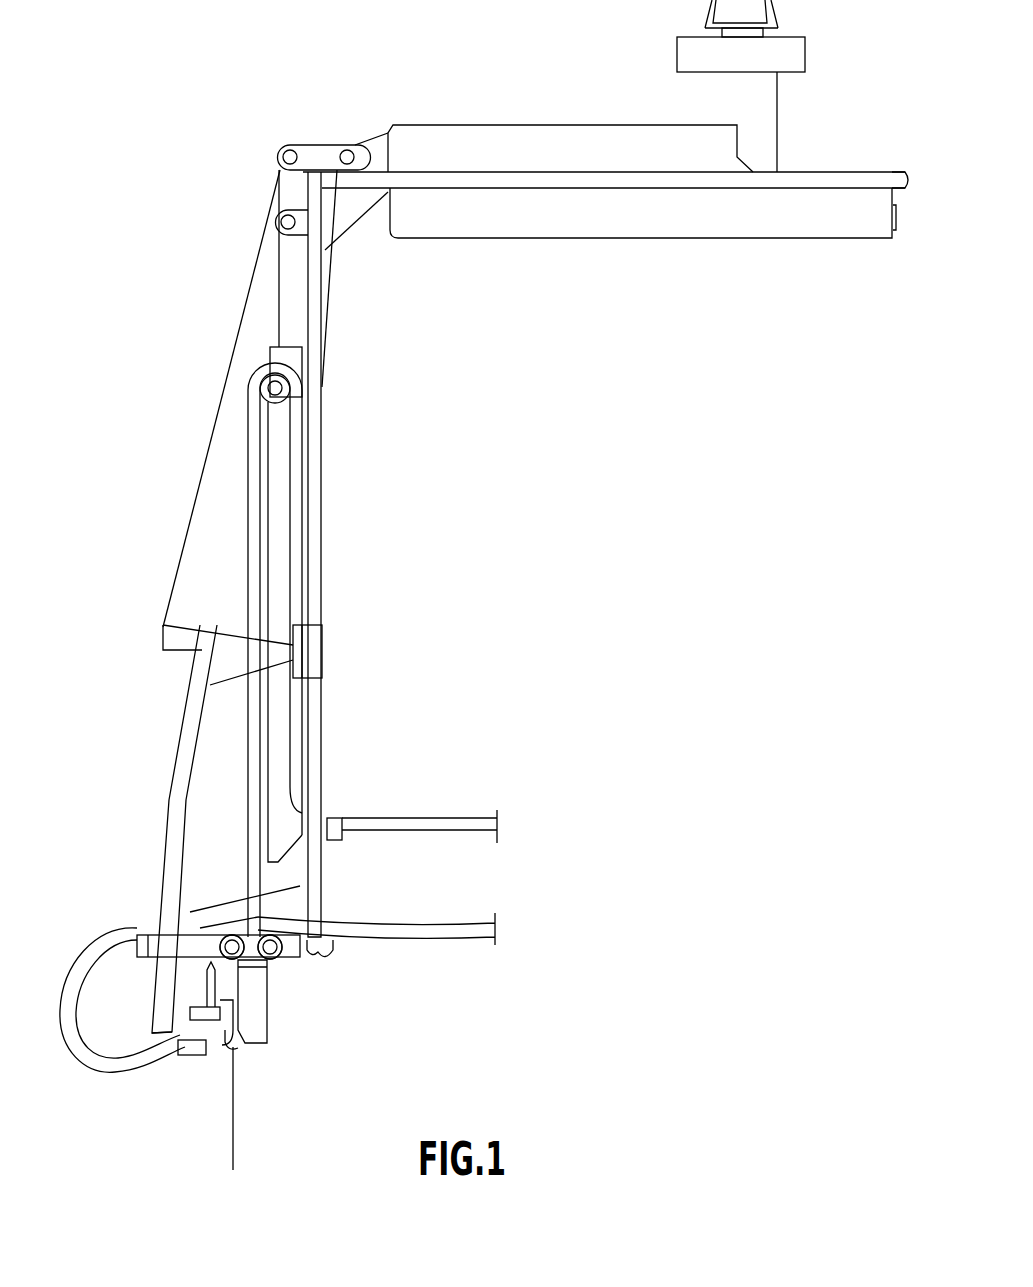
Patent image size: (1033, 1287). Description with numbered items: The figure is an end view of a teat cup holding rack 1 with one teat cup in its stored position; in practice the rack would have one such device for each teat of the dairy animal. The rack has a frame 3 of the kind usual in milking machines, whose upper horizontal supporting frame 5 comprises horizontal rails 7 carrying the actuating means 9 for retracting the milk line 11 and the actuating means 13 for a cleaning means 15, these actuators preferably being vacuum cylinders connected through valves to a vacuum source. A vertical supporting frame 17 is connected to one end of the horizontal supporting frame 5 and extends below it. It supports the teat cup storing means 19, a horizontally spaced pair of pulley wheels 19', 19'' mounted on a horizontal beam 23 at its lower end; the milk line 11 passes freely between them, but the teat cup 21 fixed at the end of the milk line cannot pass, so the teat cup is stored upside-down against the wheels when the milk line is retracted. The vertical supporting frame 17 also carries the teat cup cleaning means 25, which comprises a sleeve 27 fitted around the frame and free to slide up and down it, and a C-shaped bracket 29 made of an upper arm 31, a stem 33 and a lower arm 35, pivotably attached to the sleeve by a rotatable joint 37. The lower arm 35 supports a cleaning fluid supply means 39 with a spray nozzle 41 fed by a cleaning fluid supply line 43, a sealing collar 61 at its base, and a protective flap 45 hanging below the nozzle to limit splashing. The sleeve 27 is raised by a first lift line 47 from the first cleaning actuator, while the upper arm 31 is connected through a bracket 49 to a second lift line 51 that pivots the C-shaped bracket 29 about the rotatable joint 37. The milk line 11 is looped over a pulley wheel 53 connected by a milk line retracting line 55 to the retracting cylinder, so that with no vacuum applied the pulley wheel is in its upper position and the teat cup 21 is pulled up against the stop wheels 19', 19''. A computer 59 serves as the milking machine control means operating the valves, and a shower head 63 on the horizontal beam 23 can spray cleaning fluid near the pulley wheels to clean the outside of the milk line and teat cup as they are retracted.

The teat cup holding rack 1 is at (456, 403).
The frame 3 is at (345, 321).
The horizontal supporting frame 5 is at (792, 185).
The horizontal rails 7 is at (865, 185).
The actuating means for retracting a milk line 9 is at (800, 227).
The milk line 11 is at (417, 817).
The actuating means for a cleaning means 13 is at (507, 133).
The cleaning means 15 is at (158, 820).
The vertical supporting frame 17 is at (318, 503).
The teat cup storing means 19 is at (241, 904).
The pulley wheel 19' is at (180, 914).
The pulley wheel 19'' is at (294, 968).
The teat cup 21 is at (253, 1013).
The horizontal beam 23 is at (140, 950).
The teat cup cleaning means 25 is at (192, 1066).
The sleeve 27 is at (322, 648).
The C-shaped bracket 29 is at (193, 733).
The upper arm 31 is at (222, 663).
The stem 33 is at (183, 790).
The lower arm 35 is at (180, 1047).
The rotatable joint 37 is at (305, 627).
The cleaning fluid supply means 39 is at (225, 1042).
The spray nozzle 41 is at (207, 970).
The cleaning fluid supply line 43 is at (467, 921).
The protective flap 45 is at (235, 1153).
The first lift line 47 is at (330, 267).
The bracket 49 is at (170, 632).
The second lift line 51 is at (195, 497).
The pulley wheel 53 is at (300, 388).
The milk line retracting line 55 is at (277, 318).
The computer 59 is at (687, 58).
The sealing collar 61 is at (193, 1017).
The shower head 63 is at (332, 947).